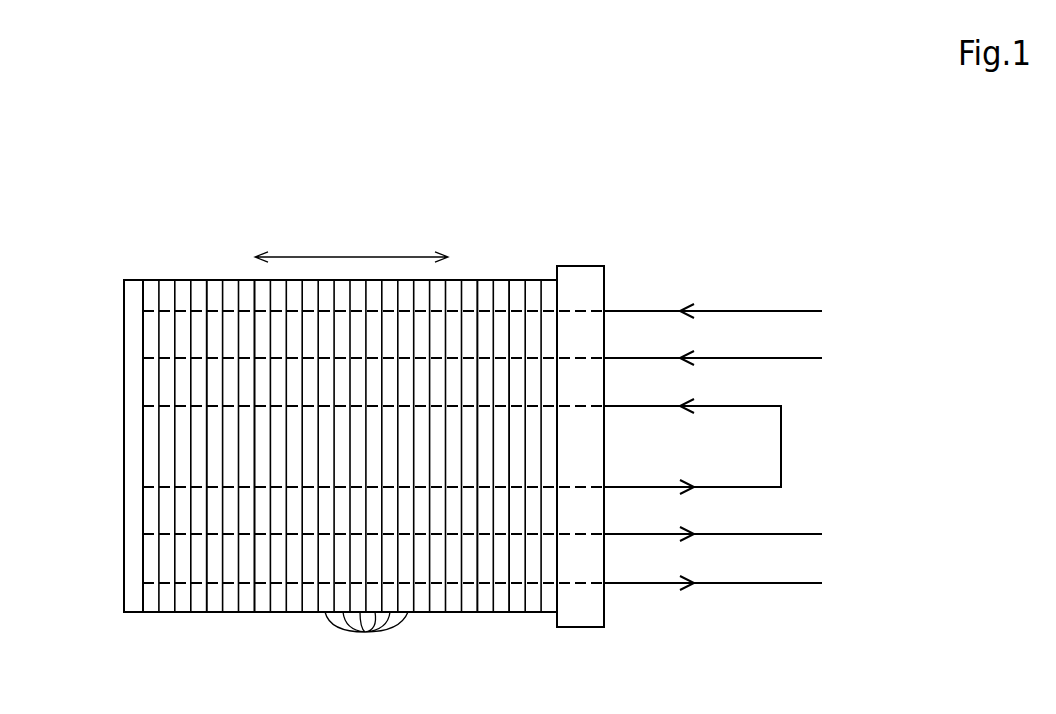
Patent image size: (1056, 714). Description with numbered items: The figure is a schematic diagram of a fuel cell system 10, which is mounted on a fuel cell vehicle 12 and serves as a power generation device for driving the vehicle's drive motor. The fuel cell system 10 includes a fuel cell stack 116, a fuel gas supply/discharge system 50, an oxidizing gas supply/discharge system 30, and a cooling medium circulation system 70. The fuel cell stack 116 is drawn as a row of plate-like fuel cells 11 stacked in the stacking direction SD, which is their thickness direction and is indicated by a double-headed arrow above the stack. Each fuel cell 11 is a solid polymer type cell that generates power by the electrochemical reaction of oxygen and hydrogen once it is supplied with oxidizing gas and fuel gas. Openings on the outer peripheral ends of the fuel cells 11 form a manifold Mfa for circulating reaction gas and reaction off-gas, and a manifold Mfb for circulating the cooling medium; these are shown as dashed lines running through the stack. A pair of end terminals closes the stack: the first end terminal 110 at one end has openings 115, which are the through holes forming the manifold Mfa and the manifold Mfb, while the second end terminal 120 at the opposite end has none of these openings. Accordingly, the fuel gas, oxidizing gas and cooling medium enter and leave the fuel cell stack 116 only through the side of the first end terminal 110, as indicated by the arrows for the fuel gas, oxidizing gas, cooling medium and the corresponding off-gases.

The fuel cell system 10 is at (397, 424).
The fuel cell 11 is at (366, 637).
The fuel cell vehicle 12 is at (817, 377).
The oxidizing gas supply/discharge system 30 is at (835, 382).
The fuel gas supply/discharge system 50 is at (799, 277).
The cooling medium circulation system 70 is at (809, 472).
The first end terminal 110 is at (583, 628).
The openings 115 is at (585, 311).
The fuel cell stack 116 is at (171, 263).
The second end terminal 120 is at (133, 613).
The manifold Mfa is at (212, 355).
The manifold Mfb is at (185, 405).
The stacking direction SD is at (351, 242).